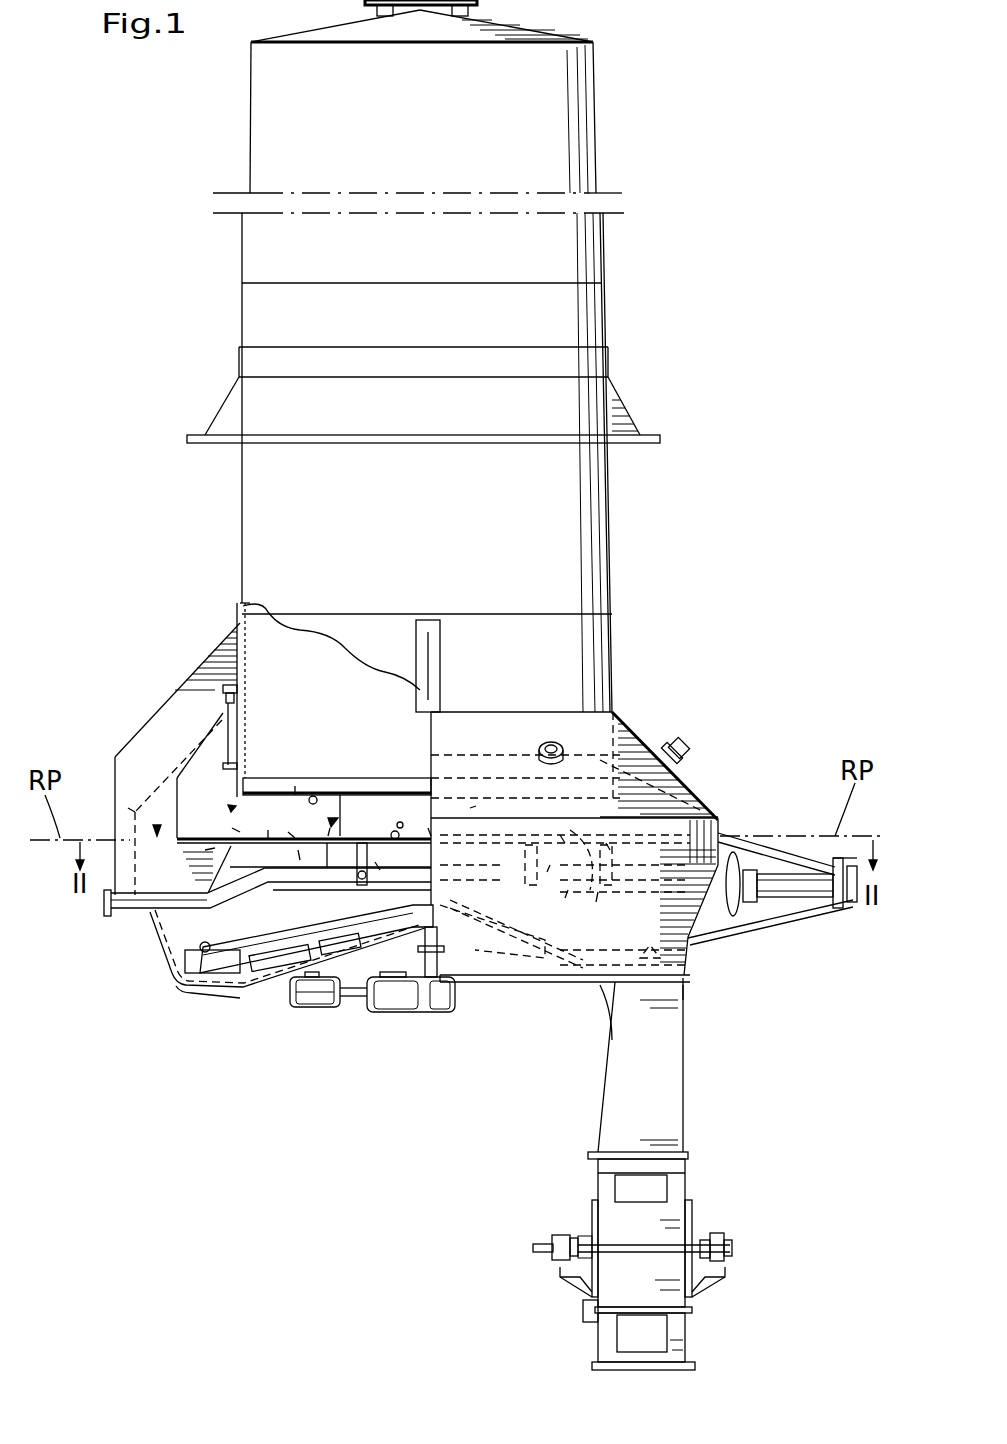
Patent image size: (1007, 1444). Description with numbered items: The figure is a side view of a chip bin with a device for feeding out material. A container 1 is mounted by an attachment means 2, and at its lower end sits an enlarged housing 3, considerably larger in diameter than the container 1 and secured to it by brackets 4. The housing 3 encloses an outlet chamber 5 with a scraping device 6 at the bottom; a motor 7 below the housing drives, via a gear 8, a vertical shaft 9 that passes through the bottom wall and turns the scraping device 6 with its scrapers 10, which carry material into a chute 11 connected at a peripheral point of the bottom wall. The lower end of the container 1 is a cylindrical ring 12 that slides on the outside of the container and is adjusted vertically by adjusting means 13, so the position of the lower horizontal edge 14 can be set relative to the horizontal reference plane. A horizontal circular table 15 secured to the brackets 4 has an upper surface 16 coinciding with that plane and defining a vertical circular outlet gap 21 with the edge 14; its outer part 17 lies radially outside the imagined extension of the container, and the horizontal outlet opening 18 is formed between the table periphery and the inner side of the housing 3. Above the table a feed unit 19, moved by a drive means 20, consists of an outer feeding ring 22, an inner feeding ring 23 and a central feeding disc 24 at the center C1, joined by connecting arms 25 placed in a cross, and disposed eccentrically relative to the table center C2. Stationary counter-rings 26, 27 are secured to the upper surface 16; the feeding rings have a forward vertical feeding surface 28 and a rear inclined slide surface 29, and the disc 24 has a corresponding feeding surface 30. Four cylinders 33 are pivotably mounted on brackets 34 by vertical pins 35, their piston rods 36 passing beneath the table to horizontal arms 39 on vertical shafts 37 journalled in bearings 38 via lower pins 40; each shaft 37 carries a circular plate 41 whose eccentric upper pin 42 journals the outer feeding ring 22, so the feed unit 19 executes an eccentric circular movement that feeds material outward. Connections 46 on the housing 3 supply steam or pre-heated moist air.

The container 1 is at (605, 563).
The attachment means 2 is at (640, 432).
The housing 3 is at (693, 785).
The brackets 4 is at (175, 708).
The outlet chamber 5 is at (185, 925).
The scraping device 6 is at (290, 940).
The motor 7 is at (312, 1000).
The gear 8 is at (432, 1012).
The vertical shaft 9 is at (424, 985).
The scrapers 10 is at (212, 990).
The chute 11 is at (670, 1083).
The cylindrical ring 12 is at (295, 786).
The adjusting means 13 is at (212, 676).
The lower horizontal edge 14 is at (340, 795).
The circular table 15 is at (288, 832).
The upper surface 16 is at (268, 830).
The outer part 17 is at (157, 826).
The outlet opening 18 is at (128, 808).
The feed unit 19 is at (333, 820).
The drive means 20 is at (777, 895).
The outlet gap 21 is at (230, 807).
The outer feeding ring 22 is at (232, 828).
The inner feeding ring 23 is at (330, 828).
The feeding disc 24 is at (428, 828).
The connecting arms 25 is at (470, 808).
The outer counter-ring 26 is at (298, 850).
The inner counter-ring 27 is at (375, 862).
The feeding surface 28 is at (205, 850).
The slide surface 29 is at (340, 820).
The feeding surface 30 is at (400, 822).
The cylinders 33 is at (797, 880).
The brackets 34 is at (772, 845).
The vertical pins 35 is at (842, 908).
The piston rods 36 is at (648, 955).
The vertical shaft 37 is at (712, 804).
The bearing 38 is at (560, 835).
The horizontal arm 39 is at (596, 902).
The lower pin 40 is at (565, 898).
The circular plate 41 is at (606, 843).
The upper pin 42 is at (547, 872).
The connections 46 is at (100, 912).
The center of the feeding rings C1 is at (438, 870).
The center of the table C2 is at (440, 835).